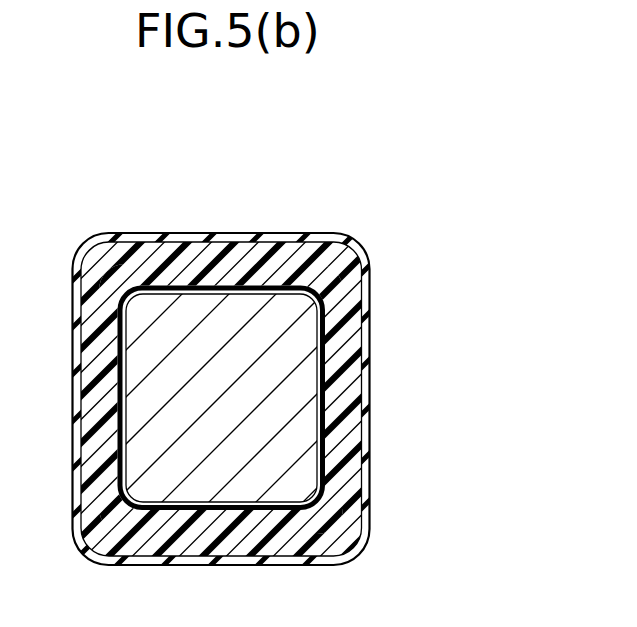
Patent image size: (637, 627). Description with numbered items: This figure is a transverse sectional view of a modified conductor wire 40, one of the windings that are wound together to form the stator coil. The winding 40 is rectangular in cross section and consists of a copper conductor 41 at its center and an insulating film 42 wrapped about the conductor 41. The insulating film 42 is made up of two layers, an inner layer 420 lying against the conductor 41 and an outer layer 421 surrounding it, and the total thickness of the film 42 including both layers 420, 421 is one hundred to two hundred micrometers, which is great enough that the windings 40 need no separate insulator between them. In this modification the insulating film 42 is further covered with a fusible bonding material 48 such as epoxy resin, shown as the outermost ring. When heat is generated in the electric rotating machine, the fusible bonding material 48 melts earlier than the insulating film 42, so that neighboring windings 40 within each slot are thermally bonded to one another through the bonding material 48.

The conductor wire 40 is at (318, 361).
The copper conductor 41 is at (275, 487).
The insulating film 42 is at (318, 400).
The inner layer 420 is at (330, 338).
The outer layer 421 is at (345, 300).
The fusible bonding material 48 is at (362, 405).